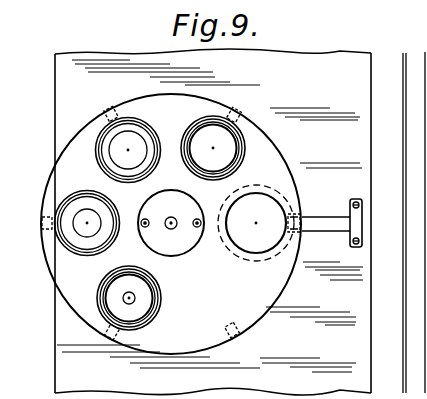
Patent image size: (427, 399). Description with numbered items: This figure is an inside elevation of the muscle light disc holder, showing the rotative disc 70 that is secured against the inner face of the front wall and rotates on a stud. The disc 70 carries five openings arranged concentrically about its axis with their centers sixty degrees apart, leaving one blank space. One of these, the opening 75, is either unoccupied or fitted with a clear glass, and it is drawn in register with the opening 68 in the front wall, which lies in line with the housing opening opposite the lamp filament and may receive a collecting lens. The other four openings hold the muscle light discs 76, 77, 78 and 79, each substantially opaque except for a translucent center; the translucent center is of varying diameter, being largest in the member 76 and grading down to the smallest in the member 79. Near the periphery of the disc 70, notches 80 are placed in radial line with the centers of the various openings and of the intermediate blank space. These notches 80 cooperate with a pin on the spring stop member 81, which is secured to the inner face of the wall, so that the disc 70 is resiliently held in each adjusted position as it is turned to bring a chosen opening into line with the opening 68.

The opening in the front wall 68 is at (233, 251).
The rotative disc 70 is at (281, 163).
The opening 75 is at (263, 248).
The muscle light disc 76 is at (238, 147).
The muscle light disc 77 is at (137, 140).
The muscle light disc 78 is at (84, 202).
The muscle light disc 79 is at (140, 315).
The notches 80 is at (113, 110).
The spring stop member 81 is at (323, 220).